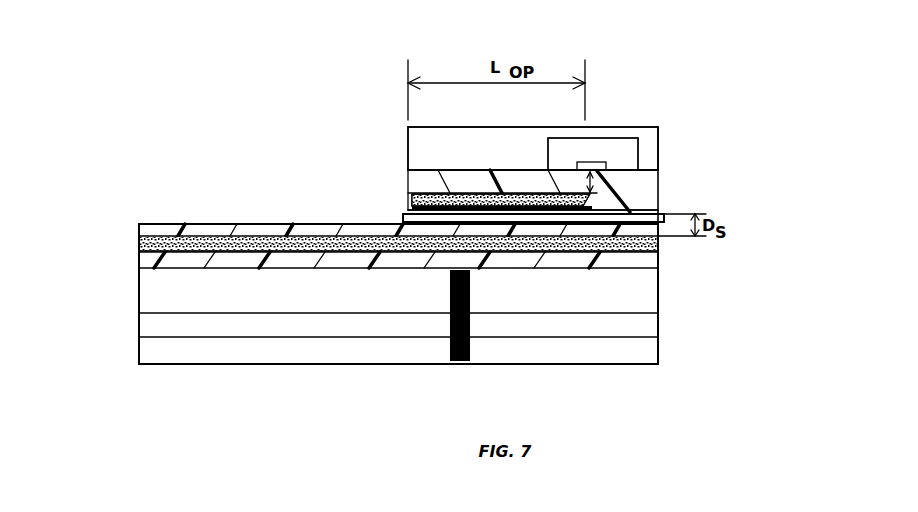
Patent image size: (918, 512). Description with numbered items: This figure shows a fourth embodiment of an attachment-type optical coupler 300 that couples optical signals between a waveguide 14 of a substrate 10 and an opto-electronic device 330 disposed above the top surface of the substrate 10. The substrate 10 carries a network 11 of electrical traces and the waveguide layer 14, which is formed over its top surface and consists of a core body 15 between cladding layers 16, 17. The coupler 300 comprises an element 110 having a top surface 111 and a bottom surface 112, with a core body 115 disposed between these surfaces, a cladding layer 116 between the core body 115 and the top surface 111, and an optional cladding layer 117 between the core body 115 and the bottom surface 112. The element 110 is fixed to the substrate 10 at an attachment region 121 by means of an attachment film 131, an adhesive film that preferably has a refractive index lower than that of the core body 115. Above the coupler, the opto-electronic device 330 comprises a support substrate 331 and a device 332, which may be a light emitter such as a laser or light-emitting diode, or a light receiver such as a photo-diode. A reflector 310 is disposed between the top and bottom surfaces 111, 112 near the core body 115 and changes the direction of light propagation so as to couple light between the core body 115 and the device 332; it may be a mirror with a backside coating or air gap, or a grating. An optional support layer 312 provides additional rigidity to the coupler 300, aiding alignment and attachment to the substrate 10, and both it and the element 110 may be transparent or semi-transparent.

The substrate 10 is at (466, 364).
The network of electrical traces 11 is at (278, 338).
The waveguide layer 14 is at (137, 270).
The core body 15 is at (143, 243).
The cladding layer 16 is at (145, 260).
The cladding layer 17 is at (145, 228).
The element 110 is at (415, 188).
The top surface 111 is at (452, 169).
The bottom surface 112 is at (656, 229).
The core body 115 is at (410, 208).
The cladding layer 116 is at (408, 198).
The cladding layer 117 is at (406, 211).
The attachment region 121 is at (405, 211).
The attachment film 131 is at (402, 218).
The optical coupler 300 is at (303, 104).
The reflector 310 is at (592, 202).
The support layer 312 is at (503, 145).
The opto-electronic device 330 is at (637, 137).
The support substrate 331 is at (632, 150).
The device 332 is at (606, 166).